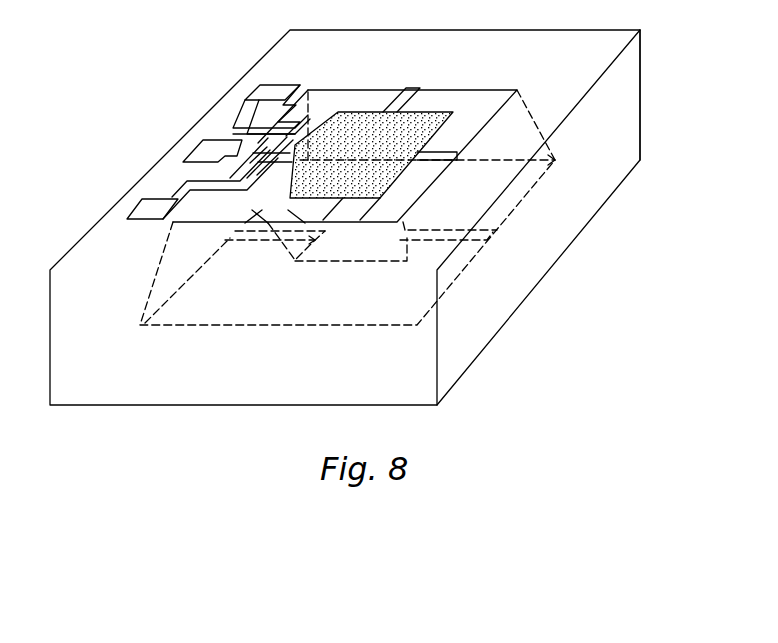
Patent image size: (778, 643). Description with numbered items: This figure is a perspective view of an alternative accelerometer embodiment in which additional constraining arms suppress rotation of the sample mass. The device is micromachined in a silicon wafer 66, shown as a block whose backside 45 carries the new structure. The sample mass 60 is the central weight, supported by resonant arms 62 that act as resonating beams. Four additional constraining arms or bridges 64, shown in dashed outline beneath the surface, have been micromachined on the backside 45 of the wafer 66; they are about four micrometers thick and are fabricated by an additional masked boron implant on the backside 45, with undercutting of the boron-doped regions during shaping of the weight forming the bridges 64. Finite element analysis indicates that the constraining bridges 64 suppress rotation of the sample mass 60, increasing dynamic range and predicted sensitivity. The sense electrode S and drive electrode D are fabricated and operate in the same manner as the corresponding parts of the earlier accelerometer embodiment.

The backside 45 is at (526, 268).
The sample mass 60 is at (358, 112).
The resonant arms 62 is at (444, 178).
The constraining bridges 64 is at (263, 240).
The silicon wafer 66 is at (640, 97).
The drive electrode D is at (270, 94).
The sense electrode S is at (153, 208).